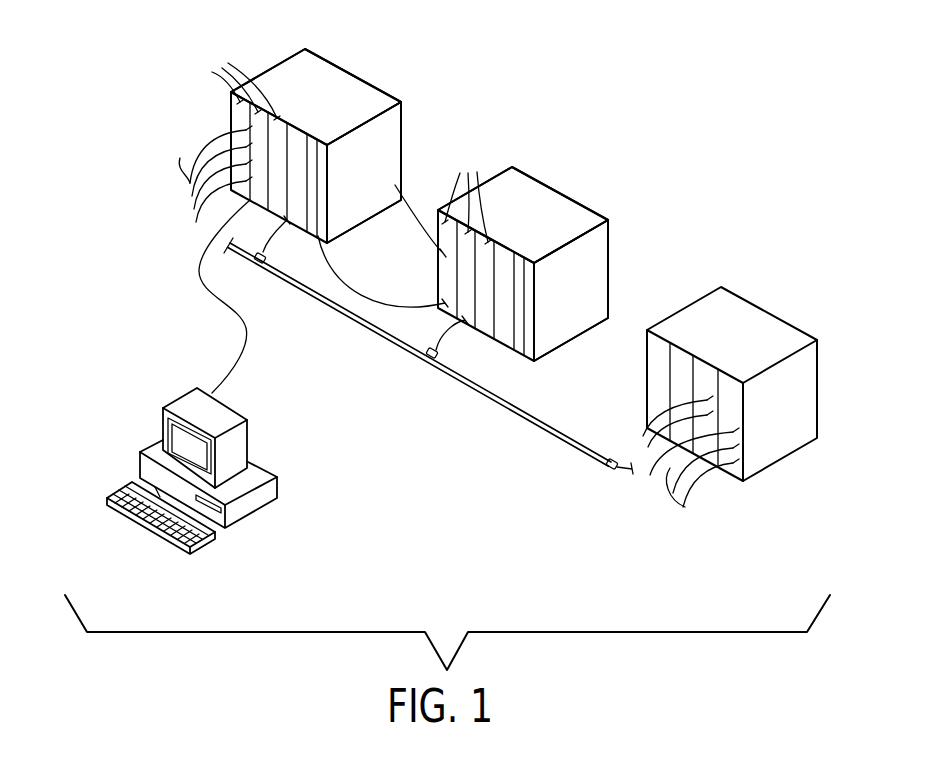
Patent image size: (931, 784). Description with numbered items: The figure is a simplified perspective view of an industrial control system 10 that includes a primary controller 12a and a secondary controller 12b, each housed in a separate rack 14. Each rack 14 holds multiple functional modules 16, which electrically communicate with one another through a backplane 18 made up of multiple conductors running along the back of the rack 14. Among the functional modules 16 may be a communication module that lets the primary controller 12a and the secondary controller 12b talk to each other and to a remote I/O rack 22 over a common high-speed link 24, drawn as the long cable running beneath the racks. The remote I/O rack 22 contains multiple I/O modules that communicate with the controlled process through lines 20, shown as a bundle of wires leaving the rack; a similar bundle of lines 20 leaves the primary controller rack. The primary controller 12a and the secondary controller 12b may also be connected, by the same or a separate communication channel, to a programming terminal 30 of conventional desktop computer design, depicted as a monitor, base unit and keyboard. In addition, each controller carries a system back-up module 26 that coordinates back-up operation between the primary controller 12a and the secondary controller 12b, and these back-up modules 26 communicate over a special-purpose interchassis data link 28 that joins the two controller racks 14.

The industrial control system 10 is at (615, 137).
The primary controller 12a is at (342, 90).
The secondary controller 12b is at (568, 212).
The rack 14 is at (377, 100).
The functional modules 16 is at (347, 141).
The backplane 18 is at (330, 46).
The lines 20 is at (205, 147).
The remote I/O rack 22 is at (770, 312).
The common high-speed link 24 is at (540, 425).
The system back-up module 26 is at (322, 175).
The interchassis data link 28 is at (363, 305).
The programming terminal 30 is at (247, 423).